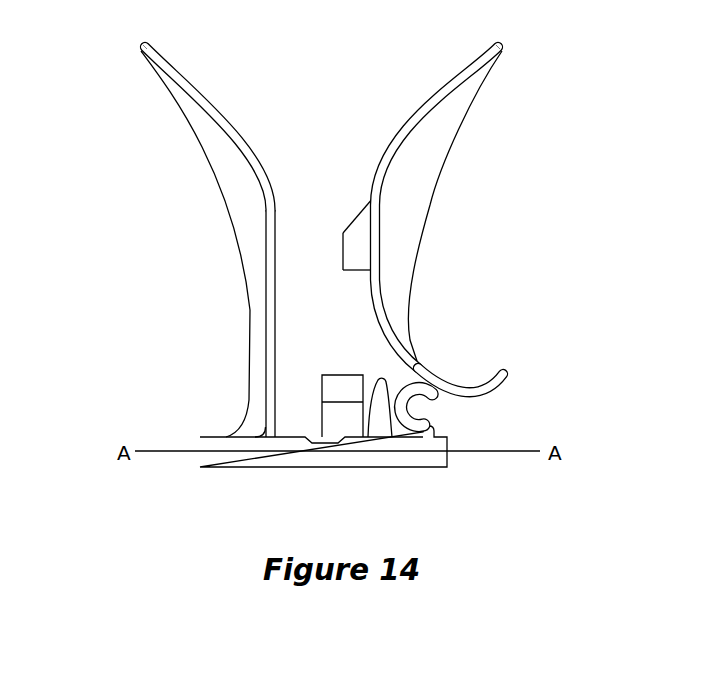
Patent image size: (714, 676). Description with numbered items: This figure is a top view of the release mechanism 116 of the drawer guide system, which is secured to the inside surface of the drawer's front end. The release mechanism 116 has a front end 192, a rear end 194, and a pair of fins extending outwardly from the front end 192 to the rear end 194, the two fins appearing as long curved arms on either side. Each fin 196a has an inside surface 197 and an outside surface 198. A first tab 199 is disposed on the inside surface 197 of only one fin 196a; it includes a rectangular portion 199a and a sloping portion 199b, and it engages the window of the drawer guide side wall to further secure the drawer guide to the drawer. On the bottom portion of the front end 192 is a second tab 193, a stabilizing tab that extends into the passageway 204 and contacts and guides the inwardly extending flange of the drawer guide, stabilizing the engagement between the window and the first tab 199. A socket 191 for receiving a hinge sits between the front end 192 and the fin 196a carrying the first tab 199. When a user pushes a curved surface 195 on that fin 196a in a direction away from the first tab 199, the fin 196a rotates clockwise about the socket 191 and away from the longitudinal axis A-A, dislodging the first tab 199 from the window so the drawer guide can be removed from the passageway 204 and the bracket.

The release mechanism 116 is at (573, 216).
The passageway 204 is at (324, 75).
The socket 191 is at (398, 420).
The front end 192 is at (437, 467).
The second tab 193 is at (337, 417).
The rear end 194 is at (143, 47).
The curved surface 195 is at (481, 381).
The fin 196a is at (240, 203).
The inside surface 197 is at (277, 317).
The outside surface 198 is at (242, 263).
The first tab 199 is at (340, 229).
The rectangular portion 199a is at (362, 248).
The sloping portion 199b is at (365, 206).